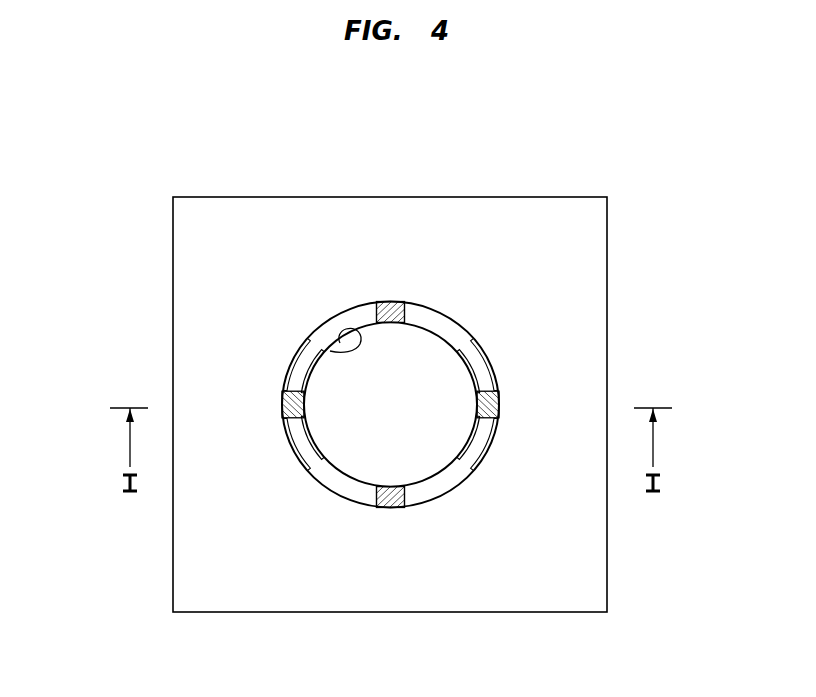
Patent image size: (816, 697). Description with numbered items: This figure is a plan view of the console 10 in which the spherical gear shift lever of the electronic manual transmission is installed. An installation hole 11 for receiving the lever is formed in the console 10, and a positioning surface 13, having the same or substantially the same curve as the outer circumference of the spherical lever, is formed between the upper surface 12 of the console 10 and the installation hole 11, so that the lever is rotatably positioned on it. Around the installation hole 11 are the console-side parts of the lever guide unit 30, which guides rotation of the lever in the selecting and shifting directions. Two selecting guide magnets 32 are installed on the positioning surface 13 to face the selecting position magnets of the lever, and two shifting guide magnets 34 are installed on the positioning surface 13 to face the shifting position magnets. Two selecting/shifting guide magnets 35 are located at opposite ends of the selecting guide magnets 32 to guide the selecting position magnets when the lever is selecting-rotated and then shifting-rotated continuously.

The console 10 is at (557, 190).
The installation hole 11 is at (332, 349).
The upper surface 12 is at (588, 253).
The positioning surface 13 is at (338, 488).
The lever guide unit 30 is at (288, 457).
The selecting guide magnets 32 is at (286, 410).
The shifting guide magnets 34 is at (385, 302).
The selecting/shifting guide magnets 35 is at (304, 374).